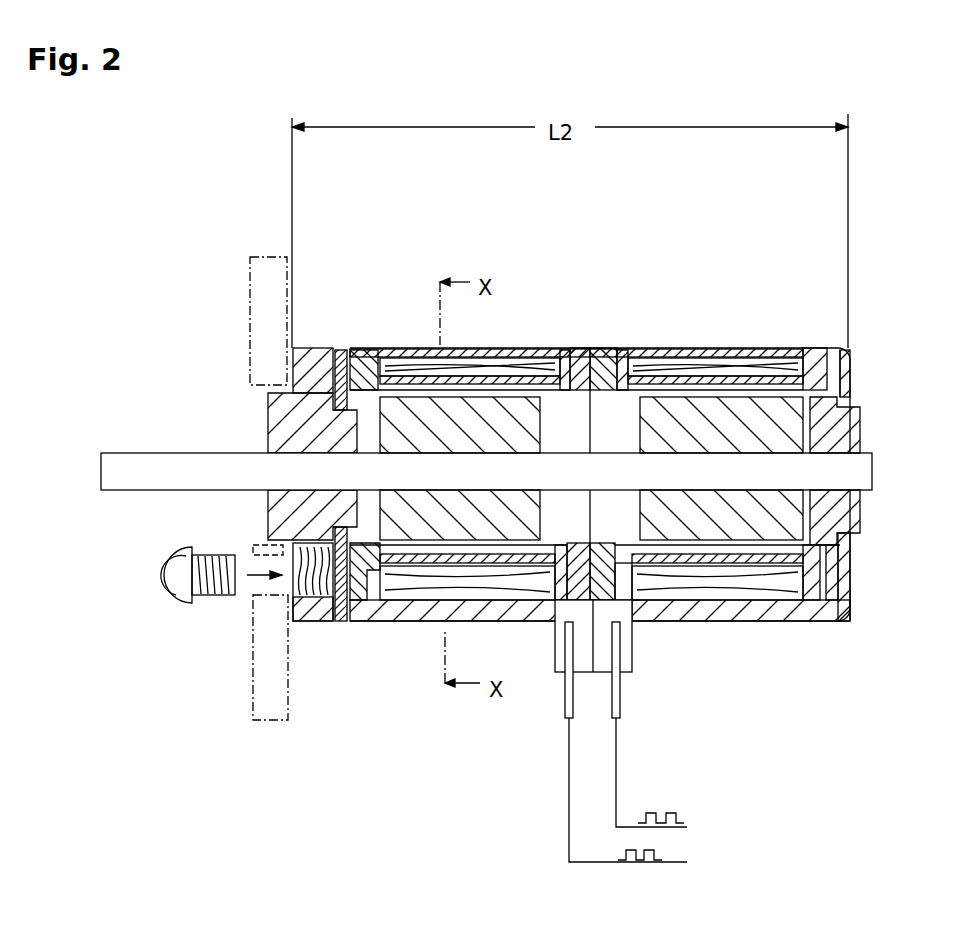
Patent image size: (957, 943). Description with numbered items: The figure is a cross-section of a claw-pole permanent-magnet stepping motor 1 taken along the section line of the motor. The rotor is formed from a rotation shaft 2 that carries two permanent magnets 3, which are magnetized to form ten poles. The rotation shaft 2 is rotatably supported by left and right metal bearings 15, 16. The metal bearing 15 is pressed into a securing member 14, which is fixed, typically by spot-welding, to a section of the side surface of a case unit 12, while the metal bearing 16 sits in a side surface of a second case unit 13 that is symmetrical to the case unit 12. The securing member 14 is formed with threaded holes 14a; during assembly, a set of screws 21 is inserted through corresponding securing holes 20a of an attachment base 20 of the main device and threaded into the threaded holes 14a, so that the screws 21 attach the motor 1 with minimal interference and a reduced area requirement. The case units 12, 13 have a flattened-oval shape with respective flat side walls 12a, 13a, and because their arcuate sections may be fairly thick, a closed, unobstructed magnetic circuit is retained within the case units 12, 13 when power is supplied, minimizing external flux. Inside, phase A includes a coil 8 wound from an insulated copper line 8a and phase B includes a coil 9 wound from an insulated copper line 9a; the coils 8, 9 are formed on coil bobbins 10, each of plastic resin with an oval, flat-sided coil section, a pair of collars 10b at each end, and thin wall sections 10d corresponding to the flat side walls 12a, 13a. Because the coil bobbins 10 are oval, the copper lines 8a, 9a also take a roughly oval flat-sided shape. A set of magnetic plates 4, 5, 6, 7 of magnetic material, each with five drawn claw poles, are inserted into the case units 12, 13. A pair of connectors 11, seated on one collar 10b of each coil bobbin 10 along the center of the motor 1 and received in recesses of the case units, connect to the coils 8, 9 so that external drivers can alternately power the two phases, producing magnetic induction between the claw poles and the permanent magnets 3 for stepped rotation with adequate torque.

The claw-pole permanent-magnet stepping motor 1 is at (893, 297).
The rotation shaft 2 is at (149, 462).
The permanent magnet 3 is at (420, 410).
The magnetic plate 4 is at (345, 352).
The magnetic plate 5 is at (588, 368).
The magnetic plate 6 is at (597, 352).
The magnetic plate 7 is at (818, 348).
The coil 8 is at (509, 592).
The insulated copper line 8a is at (420, 563).
The coil 9 is at (767, 583).
The insulated copper line 9a is at (730, 580).
The coil bobbin 10 is at (470, 580).
The collar 10b is at (635, 592).
The thin wall section 10d is at (478, 368).
The connector 11 is at (582, 650).
The case unit 12 is at (370, 627).
The flat side wall 12a is at (543, 613).
The second case unit 13 is at (640, 595).
The flat side wall 13a is at (638, 613).
The securing member 14 is at (318, 348).
The threaded hole 14a is at (318, 623).
The metal bearing 15 is at (268, 421).
The metal bearing 16 is at (860, 425).
The attachment base 20 is at (253, 655).
The securing hole 20a is at (260, 585).
The screw 21 is at (178, 593).